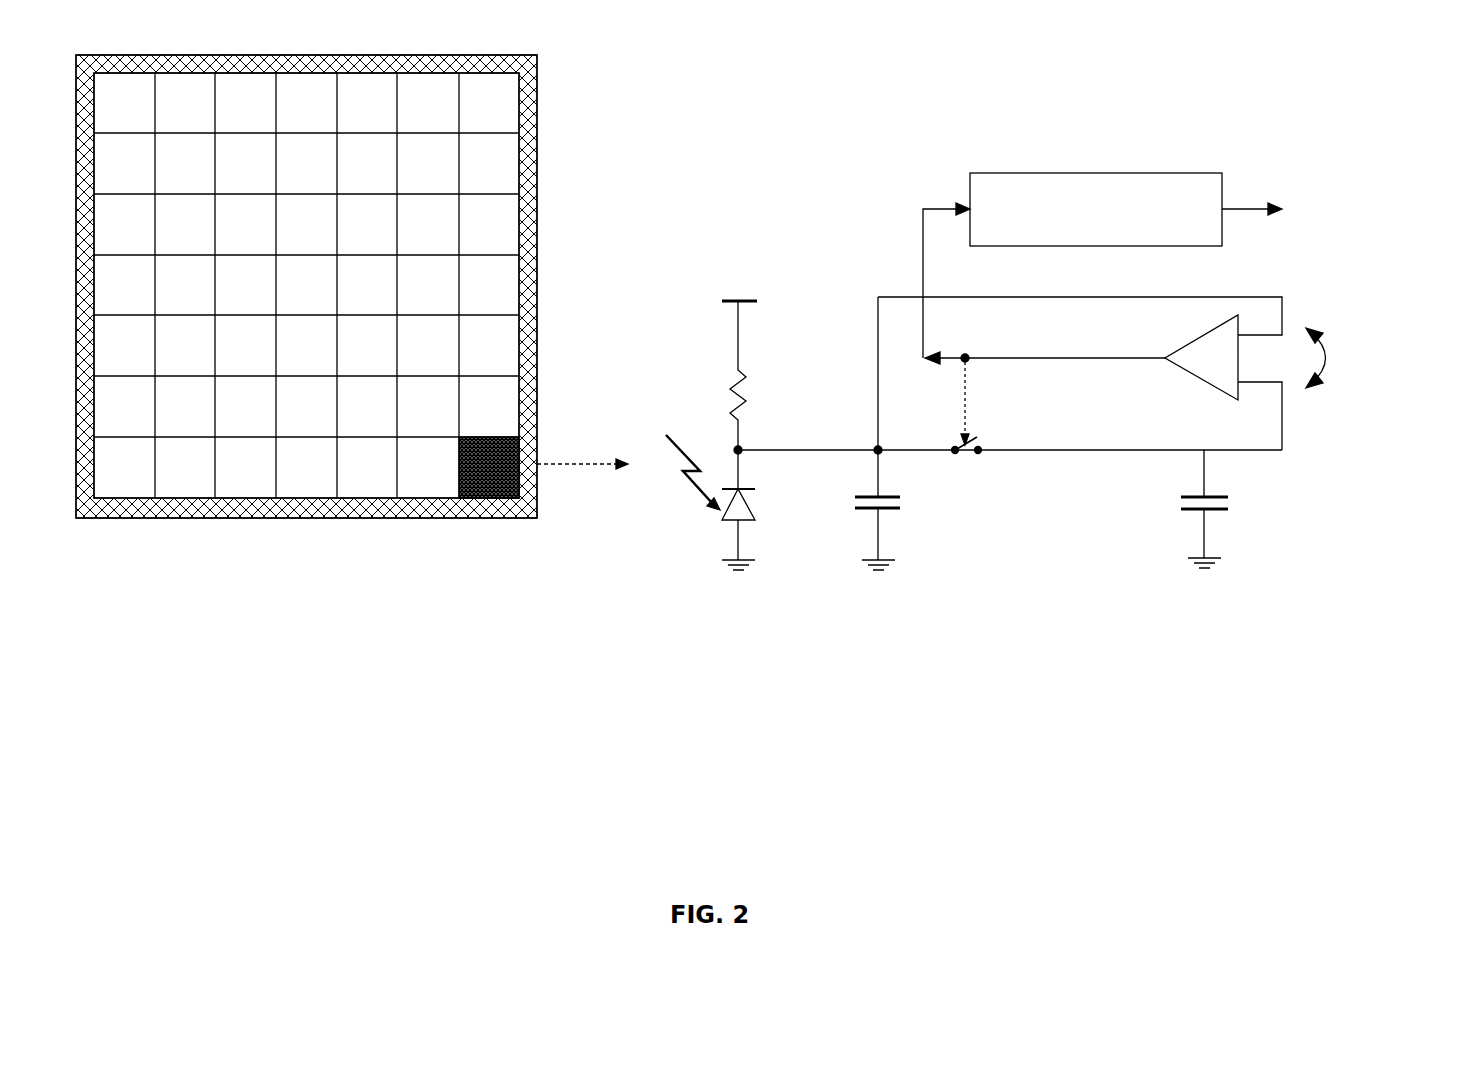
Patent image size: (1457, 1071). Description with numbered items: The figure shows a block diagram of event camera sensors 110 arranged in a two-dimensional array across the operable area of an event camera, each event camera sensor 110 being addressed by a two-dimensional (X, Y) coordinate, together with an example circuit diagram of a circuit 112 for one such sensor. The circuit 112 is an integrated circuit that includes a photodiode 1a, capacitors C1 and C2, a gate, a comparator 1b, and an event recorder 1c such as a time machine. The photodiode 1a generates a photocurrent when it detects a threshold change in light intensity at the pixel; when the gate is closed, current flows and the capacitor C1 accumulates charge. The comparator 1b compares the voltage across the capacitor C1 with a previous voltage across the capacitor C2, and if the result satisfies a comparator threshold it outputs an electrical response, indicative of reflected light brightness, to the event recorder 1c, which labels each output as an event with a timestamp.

The event camera sensor 110 is at (473, 498).
The circuit 112 is at (1369, 109).
The photodiode 1a is at (753, 529).
The comparator 1b is at (1225, 370).
The event recorder 1c is at (1199, 206).
The capacitor C1 is at (893, 433).
The capacitor C2 is at (1219, 509).